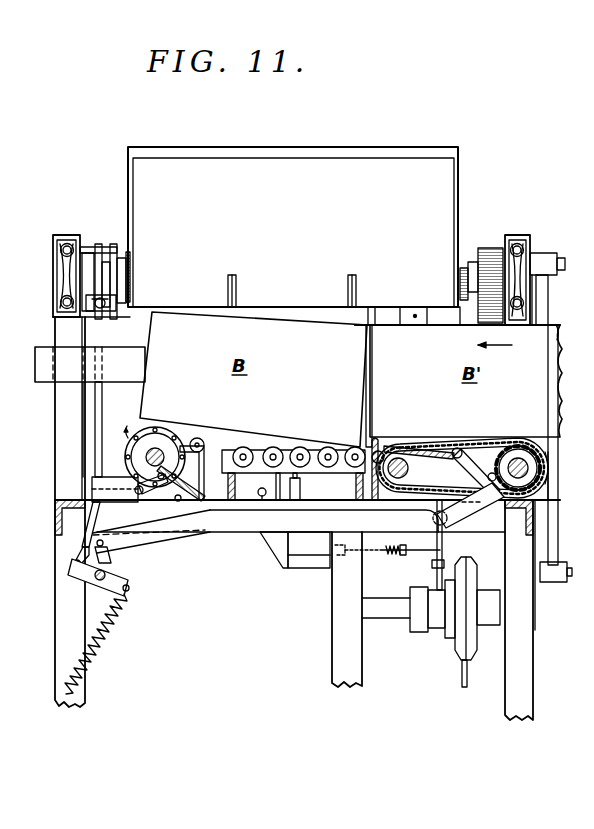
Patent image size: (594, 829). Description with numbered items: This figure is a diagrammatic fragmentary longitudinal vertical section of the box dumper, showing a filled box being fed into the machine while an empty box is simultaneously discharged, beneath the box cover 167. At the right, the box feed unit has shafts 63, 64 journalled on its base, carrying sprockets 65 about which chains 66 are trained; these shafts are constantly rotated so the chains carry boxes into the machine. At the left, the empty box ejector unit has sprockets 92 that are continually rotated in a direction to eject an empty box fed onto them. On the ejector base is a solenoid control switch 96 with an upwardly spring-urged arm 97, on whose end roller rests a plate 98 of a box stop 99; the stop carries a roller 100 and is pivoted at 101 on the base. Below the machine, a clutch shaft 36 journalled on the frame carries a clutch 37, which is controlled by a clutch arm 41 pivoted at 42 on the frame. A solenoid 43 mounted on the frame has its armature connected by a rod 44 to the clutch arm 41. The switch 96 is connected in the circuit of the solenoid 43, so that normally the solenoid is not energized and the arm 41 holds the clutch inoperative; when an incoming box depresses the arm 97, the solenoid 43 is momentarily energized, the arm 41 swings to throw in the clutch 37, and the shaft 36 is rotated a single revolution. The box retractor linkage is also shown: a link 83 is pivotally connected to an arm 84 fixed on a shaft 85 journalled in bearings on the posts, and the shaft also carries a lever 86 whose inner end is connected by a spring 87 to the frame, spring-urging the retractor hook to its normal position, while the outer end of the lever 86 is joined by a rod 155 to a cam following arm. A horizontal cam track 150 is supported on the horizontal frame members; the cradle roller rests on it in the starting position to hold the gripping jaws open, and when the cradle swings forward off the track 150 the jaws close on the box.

The box cover 167 is at (401, 173).
The rod 155 is at (102, 424).
The solenoid control switch 96 is at (112, 485).
The sprockets 92 is at (162, 440).
The roller 100 is at (198, 437).
The box stop 99 is at (203, 457).
The plate 98 is at (201, 489).
The arm 97 is at (144, 490).
The horizontal cam track 150 is at (299, 493).
The shaft 63 is at (409, 468).
The sprockets 65 is at (417, 480).
The shaft 64 is at (527, 473).
The chains 66 is at (549, 462).
The pivot 42 is at (455, 512).
The pivot 101 is at (178, 502).
The link 83 is at (216, 528).
The shaft 85 is at (103, 585).
The arm 84 is at (106, 562).
The lever 86 is at (129, 592).
The spring 87 is at (103, 634).
The solenoid 43 is at (304, 562).
The clutch arm 41 is at (436, 562).
The rod 44 is at (387, 554).
The clutch shaft 36 is at (384, 612).
The clutch 37 is at (473, 594).